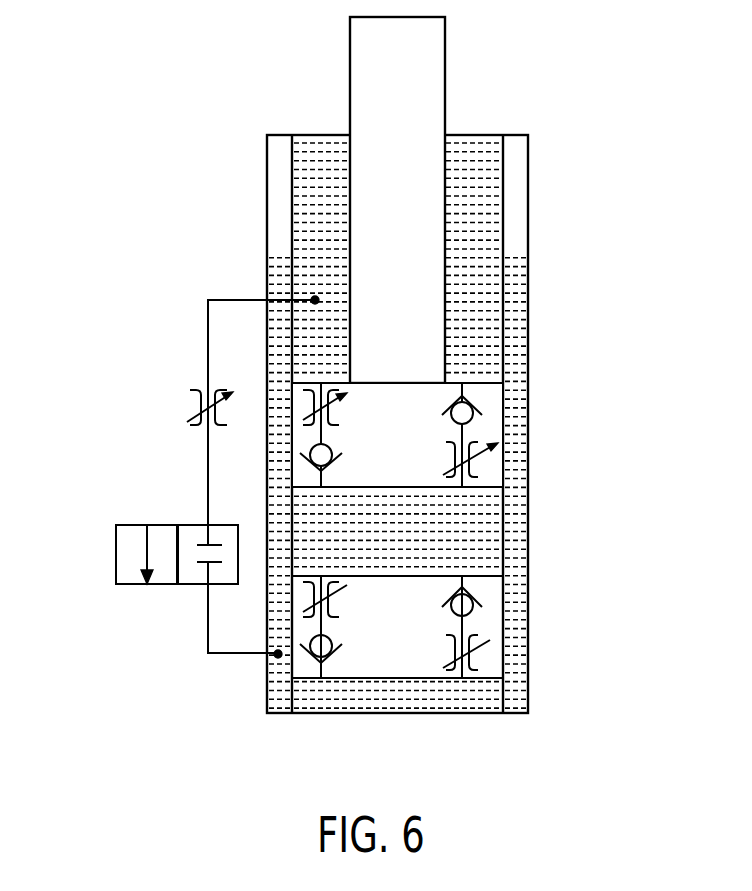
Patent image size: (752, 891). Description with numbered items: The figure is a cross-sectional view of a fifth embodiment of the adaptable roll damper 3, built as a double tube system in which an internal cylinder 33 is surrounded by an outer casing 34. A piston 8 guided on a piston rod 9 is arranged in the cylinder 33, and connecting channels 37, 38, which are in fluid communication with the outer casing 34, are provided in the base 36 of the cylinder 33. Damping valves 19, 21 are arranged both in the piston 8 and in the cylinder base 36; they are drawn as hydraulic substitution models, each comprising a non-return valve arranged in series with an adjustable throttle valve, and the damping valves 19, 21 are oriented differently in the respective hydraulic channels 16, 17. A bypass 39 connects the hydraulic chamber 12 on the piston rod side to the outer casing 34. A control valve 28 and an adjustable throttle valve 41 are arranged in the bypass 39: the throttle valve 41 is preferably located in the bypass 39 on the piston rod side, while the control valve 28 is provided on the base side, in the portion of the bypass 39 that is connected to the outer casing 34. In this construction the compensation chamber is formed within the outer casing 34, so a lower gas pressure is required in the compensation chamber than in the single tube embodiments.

The roll damper 3 is at (532, 63).
The piston 8 is at (500, 395).
The piston rod 9 is at (445, 110).
The hydraulic chamber 12 is at (310, 138).
The hydraulic channel 16 is at (328, 388).
The hydraulic channel 17 is at (472, 440).
The damping valve 19 is at (335, 458).
The damping valve 21 is at (448, 458).
The control valve 28 is at (116, 532).
The internal cylinder 33 is at (498, 543).
The outer casing 34 is at (513, 657).
The cylinder base 36 is at (493, 605).
The connecting channel 37 is at (320, 665).
The connecting channel 38 is at (467, 680).
The bypass 39 is at (238, 300).
The adjustable throttle valve 41 is at (198, 415).